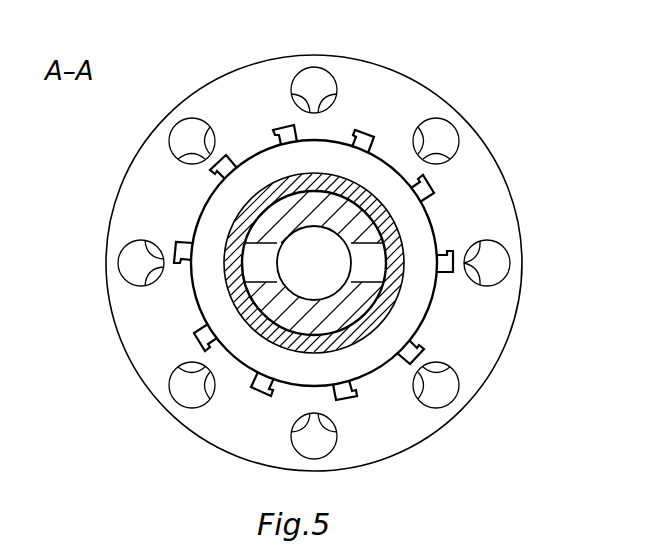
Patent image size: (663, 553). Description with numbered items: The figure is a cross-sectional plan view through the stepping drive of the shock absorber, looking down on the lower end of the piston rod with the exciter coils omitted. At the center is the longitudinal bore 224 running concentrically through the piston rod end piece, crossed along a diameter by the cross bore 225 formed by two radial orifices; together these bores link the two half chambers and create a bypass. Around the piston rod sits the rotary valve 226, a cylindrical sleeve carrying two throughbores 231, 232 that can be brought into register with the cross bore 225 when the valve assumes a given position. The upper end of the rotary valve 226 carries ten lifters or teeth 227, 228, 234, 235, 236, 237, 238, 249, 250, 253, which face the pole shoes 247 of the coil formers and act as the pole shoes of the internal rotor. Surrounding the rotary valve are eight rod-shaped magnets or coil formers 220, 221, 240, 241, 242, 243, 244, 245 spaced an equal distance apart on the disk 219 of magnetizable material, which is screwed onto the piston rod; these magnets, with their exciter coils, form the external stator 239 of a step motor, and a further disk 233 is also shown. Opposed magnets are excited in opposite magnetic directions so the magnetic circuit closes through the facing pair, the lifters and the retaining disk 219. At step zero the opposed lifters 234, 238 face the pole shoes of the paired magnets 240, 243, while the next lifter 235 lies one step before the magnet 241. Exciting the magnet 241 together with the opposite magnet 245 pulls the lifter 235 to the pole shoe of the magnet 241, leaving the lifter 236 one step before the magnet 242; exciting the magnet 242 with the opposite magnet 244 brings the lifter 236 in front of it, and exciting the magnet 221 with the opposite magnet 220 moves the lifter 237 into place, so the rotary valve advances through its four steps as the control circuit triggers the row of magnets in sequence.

The disk 219 is at (232, 452).
The magnet 220 is at (118, 266).
The magnet 221 is at (497, 263).
The longitudinal bore 224 is at (285, 293).
The cross bore 225 is at (283, 251).
The rotary valve 226 is at (232, 228).
The lifter 227 is at (183, 262).
The lifter 228 is at (438, 272).
The bore in rotary valve 231 is at (258, 319).
The bore in rotary valve 232 is at (376, 208).
The disk 233 is at (363, 381).
The lifter 234 is at (218, 158).
The lifter 235 is at (280, 131).
The lifter 236 is at (366, 140).
The lifter 237 is at (429, 188).
The lifter 238 is at (411, 352).
The stator 239 is at (522, 173).
The magnet 240 is at (176, 139).
The magnet 241 is at (312, 75).
The magnet 242 is at (452, 135).
The magnet 243 is at (444, 402).
The magnet 244 is at (196, 392).
The magnet 245 is at (320, 450).
The pole shoe 247 is at (212, 383).
The lifter 249 is at (335, 386).
The lifter 250 is at (262, 398).
The lifter 253 is at (202, 337).